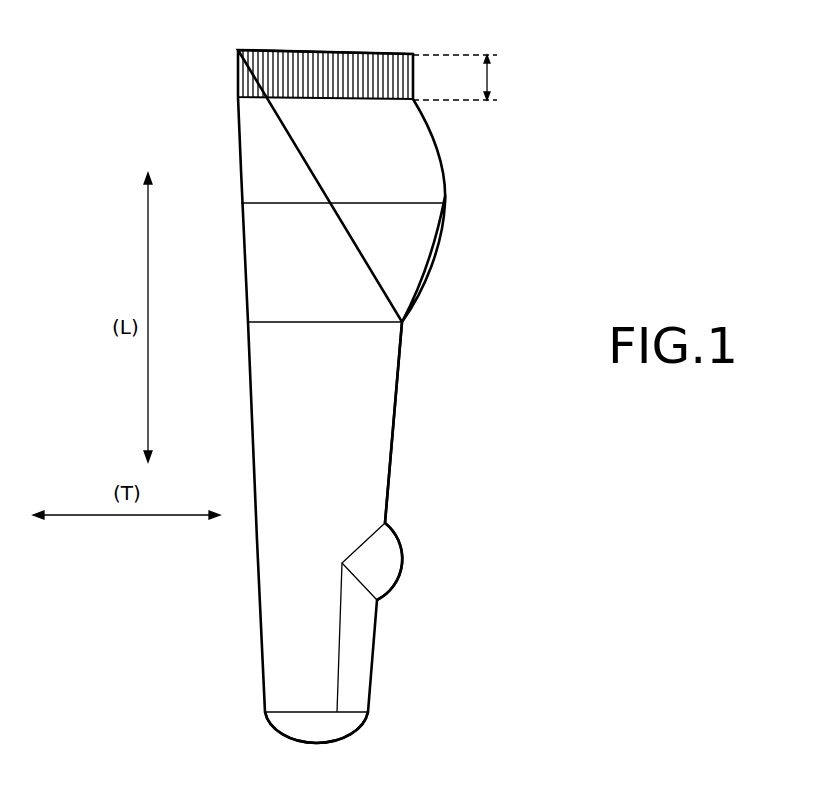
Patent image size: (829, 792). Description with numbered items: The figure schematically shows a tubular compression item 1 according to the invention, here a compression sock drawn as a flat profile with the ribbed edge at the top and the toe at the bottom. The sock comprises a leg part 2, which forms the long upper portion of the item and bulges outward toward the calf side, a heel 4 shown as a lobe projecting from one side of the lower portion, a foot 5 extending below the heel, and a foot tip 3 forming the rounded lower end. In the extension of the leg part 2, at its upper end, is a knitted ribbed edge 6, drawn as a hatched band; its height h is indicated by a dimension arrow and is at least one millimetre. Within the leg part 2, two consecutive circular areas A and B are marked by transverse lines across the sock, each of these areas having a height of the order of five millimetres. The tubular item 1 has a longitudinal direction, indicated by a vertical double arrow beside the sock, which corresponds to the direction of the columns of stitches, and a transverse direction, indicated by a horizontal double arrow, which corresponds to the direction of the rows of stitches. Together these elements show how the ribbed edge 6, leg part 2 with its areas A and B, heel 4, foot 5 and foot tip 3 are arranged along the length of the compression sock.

The tubular compression item 1 is at (442, 438).
The leg part 2 is at (401, 345).
The foot tip 3 is at (324, 739).
The heel 4 is at (382, 574).
The foot 5 is at (319, 650).
The ribbed edge 6 is at (344, 75).
The circular area A is at (246, 322).
The circular area B is at (239, 203).
The height of the ribbed edge h is at (489, 78).